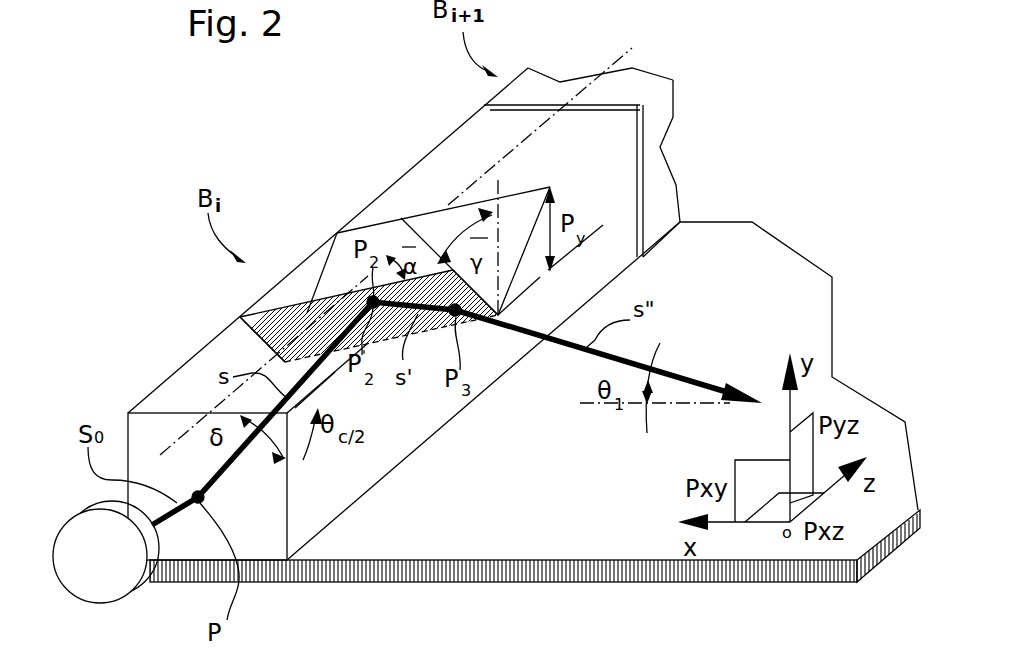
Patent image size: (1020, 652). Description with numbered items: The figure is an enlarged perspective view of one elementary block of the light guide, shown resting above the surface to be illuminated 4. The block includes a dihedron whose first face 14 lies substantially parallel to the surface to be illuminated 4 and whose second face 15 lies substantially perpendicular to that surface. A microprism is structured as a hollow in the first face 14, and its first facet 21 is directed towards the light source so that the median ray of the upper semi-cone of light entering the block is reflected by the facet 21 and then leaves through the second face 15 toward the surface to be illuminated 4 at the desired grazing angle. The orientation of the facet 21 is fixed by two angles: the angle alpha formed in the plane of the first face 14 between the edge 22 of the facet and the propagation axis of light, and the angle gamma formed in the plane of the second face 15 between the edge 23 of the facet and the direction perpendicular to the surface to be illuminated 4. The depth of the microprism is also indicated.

The surface to be illuminated 4 is at (457, 572).
The first face 14 is at (456, 160).
The second face 15 is at (623, 203).
The first facet 21 is at (252, 340).
The edge of facet 22 is at (296, 290).
The edge of facet 23 is at (478, 293).